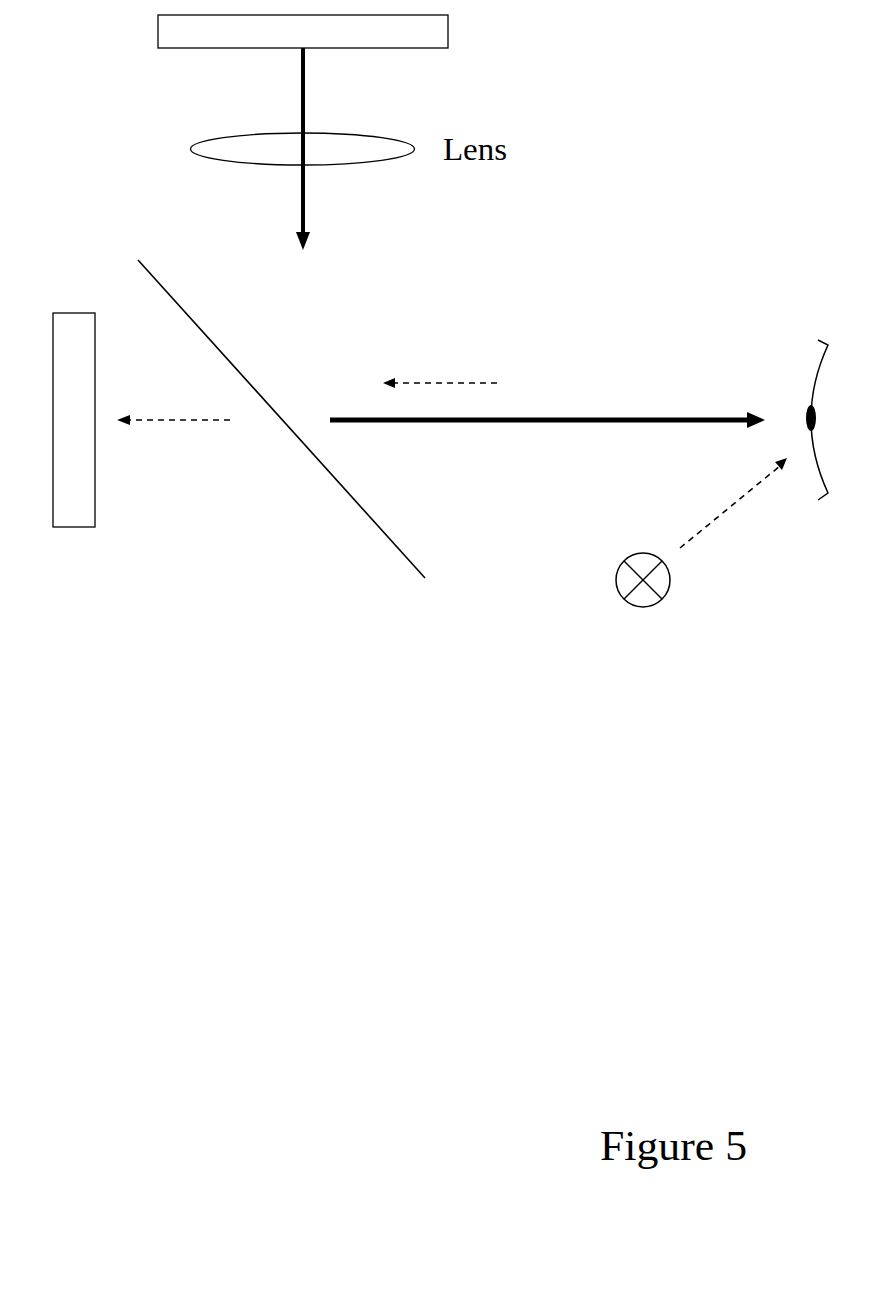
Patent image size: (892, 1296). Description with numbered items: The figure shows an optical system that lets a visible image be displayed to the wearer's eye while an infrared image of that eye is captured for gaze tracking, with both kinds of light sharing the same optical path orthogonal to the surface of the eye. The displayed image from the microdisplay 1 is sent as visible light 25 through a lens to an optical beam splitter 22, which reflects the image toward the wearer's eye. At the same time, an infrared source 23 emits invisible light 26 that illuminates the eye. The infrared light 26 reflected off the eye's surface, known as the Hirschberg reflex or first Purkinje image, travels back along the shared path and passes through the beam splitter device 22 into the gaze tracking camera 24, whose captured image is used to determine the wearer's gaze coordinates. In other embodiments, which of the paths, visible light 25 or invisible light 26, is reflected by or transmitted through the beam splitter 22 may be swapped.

The microdisplay 1 is at (437, 32).
The optical beam splitter 22 is at (315, 467).
The infrared source 23 is at (692, 617).
The gaze tracking camera 24 is at (77, 491).
The visible light 25 is at (530, 238).
The invisible light 26 is at (452, 451).